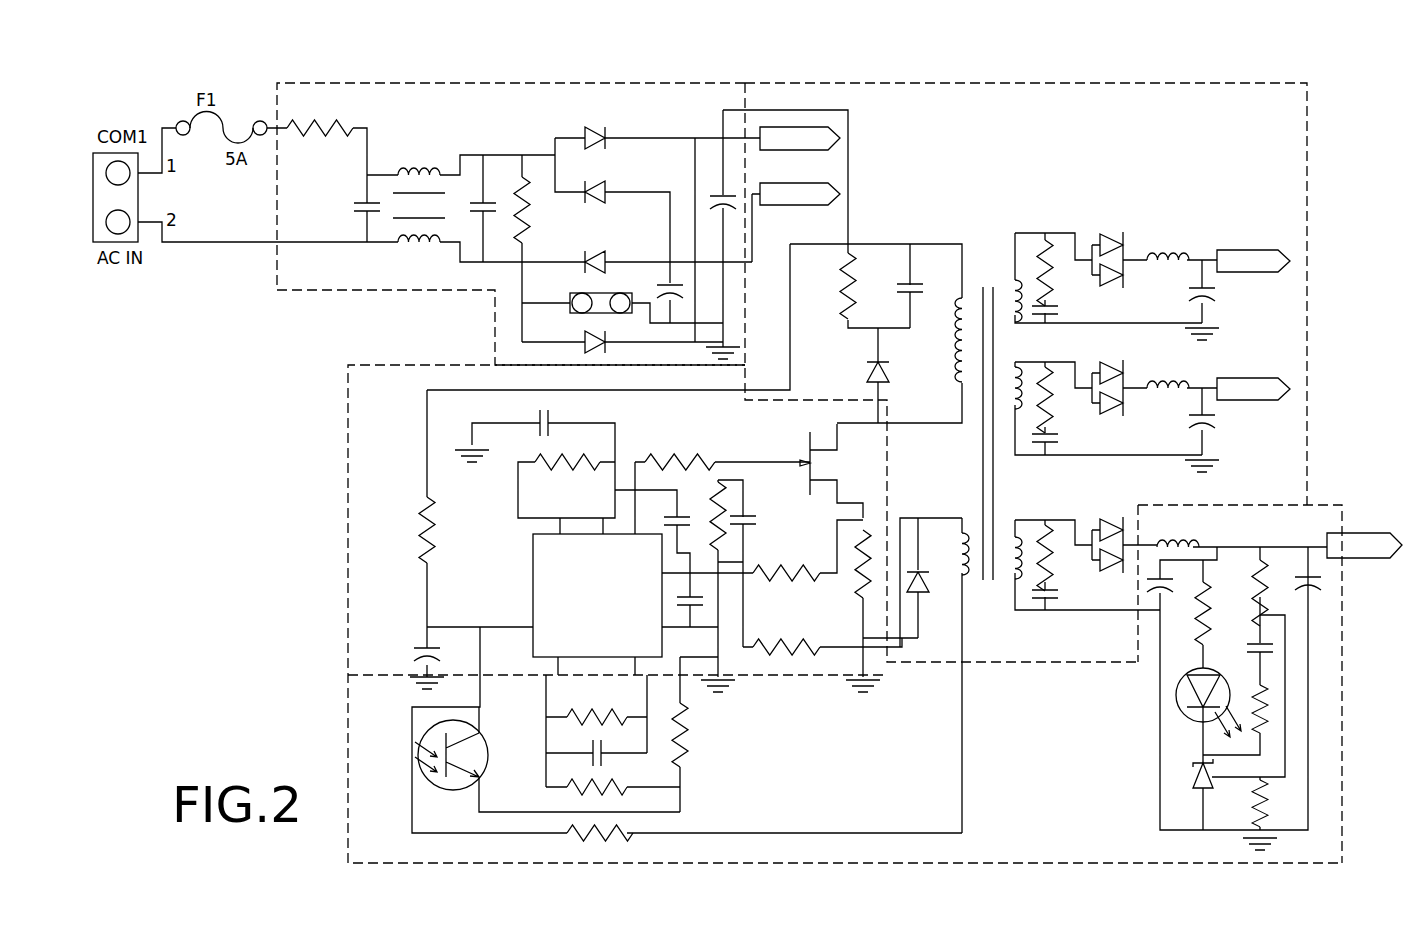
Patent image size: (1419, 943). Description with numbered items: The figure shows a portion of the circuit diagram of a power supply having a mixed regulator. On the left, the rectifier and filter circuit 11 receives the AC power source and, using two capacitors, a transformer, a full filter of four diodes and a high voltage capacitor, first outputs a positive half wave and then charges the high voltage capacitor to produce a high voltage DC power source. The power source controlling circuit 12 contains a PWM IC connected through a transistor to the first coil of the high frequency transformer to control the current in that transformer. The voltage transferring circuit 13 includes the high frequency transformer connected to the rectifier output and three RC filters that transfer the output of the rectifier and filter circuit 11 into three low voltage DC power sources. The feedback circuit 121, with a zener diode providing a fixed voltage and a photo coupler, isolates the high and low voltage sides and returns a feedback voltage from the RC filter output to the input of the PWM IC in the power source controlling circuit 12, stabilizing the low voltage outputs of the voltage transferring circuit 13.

The rectifier and filter circuit 11 is at (595, 83).
The power source controlling circuit 12 is at (1025, 83).
The voltage transferring circuit 13 is at (350, 492).
The feedback circuit 121 is at (1342, 672).